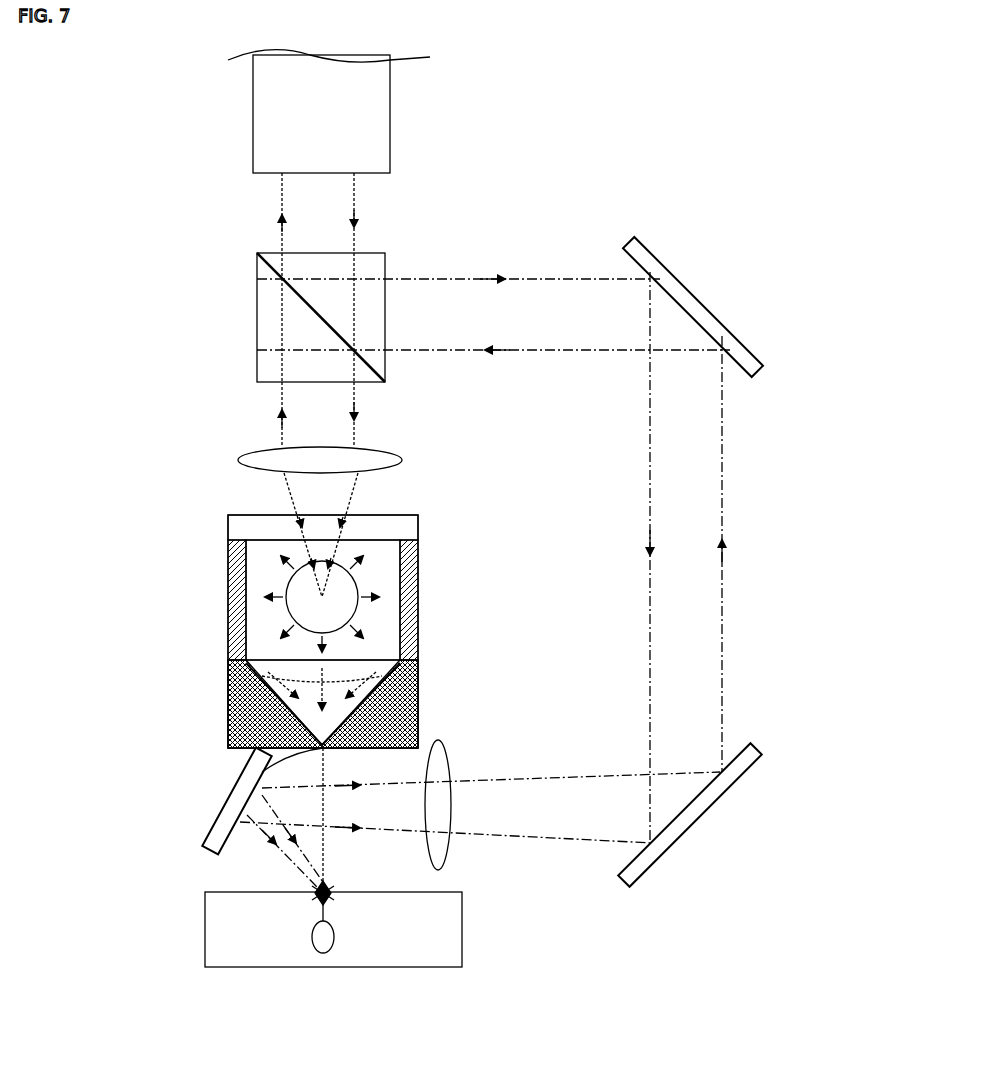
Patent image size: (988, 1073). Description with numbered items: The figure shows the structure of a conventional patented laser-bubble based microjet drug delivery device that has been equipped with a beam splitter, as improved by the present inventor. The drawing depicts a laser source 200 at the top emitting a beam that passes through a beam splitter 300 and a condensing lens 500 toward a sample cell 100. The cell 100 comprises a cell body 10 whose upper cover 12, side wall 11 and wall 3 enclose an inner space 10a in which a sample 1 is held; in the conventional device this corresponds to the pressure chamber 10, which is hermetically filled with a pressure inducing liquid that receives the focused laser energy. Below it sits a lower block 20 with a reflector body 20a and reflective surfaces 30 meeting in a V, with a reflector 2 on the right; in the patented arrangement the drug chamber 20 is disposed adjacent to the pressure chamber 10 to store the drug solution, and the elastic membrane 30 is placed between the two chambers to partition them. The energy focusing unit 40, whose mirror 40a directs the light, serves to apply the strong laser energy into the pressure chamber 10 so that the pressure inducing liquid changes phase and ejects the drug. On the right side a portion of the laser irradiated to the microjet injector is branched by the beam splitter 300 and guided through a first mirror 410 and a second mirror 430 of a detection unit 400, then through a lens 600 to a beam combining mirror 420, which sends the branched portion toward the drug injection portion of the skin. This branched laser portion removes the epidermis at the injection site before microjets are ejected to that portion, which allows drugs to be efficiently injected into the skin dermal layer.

The light source 200 is at (273, 131).
The beam splitter 300 is at (270, 325).
The condensing lens 500 is at (385, 452).
The sample cell 100 is at (327, 634).
The pressure chamber 10 is at (357, 593).
The upper cover 12 is at (410, 525).
The side wall 11 is at (418, 625).
The wall 3 is at (228, 578).
The inner space 10a is at (228, 650).
The sample 1 is at (228, 603).
The drug chamber 20 is at (322, 706).
The reflector body 20a is at (228, 725).
The elastic membrane 30 is at (418, 685).
The reflector 2 is at (418, 713).
The lens 600 is at (445, 745).
The detection unit 400 is at (509, 603).
The first mirror 410 is at (755, 368).
The second mirror 430 is at (712, 815).
The beam combiner mirror 420 is at (421, 847).
The energy focusing unit 40 is at (208, 801).
The mirror 40a is at (248, 772).